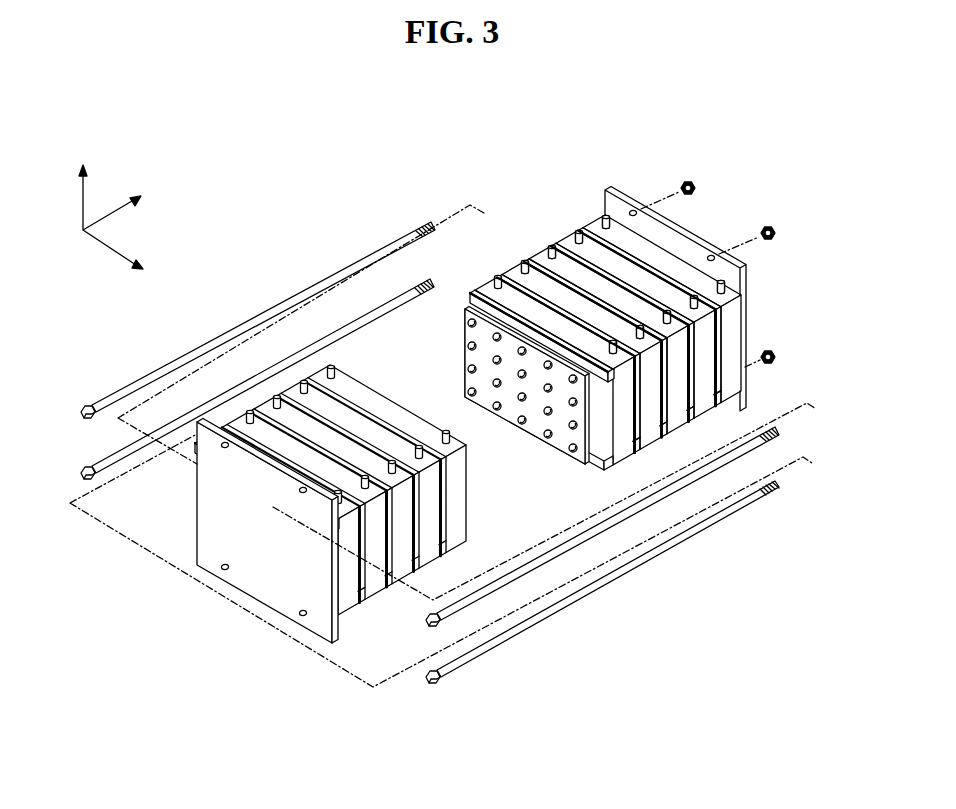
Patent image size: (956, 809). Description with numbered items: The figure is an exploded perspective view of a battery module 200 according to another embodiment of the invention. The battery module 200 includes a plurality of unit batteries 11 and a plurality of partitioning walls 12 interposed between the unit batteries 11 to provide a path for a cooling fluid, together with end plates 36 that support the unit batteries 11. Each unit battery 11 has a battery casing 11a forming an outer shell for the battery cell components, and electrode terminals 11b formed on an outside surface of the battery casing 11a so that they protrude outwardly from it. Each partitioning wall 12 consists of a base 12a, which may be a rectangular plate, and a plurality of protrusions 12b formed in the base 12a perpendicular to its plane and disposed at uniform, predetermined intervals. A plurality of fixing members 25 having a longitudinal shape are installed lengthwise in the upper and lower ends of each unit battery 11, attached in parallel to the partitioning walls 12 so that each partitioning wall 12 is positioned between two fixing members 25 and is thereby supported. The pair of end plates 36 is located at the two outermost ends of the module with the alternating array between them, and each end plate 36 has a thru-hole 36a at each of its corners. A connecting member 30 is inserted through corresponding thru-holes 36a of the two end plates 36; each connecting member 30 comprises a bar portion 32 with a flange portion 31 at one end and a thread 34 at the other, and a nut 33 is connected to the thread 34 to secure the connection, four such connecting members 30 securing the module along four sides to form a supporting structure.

The battery module 200 is at (422, 136).
The unit battery 11 is at (502, 414).
The battery casing 11a is at (707, 345).
The electrode terminals 11b is at (601, 219).
The partitioning wall 12 is at (490, 392).
The base 12a is at (557, 442).
The protrusions 12b is at (530, 427).
The fixing members 25 is at (524, 258).
The connecting member 30 is at (421, 436).
The flange portion 31 is at (92, 406).
The bar portion 32 is at (211, 342).
The nut 33 is at (691, 181).
The thread 34 is at (430, 229).
The end plates 36 is at (448, 404).
The thru-hole 36a is at (634, 208).